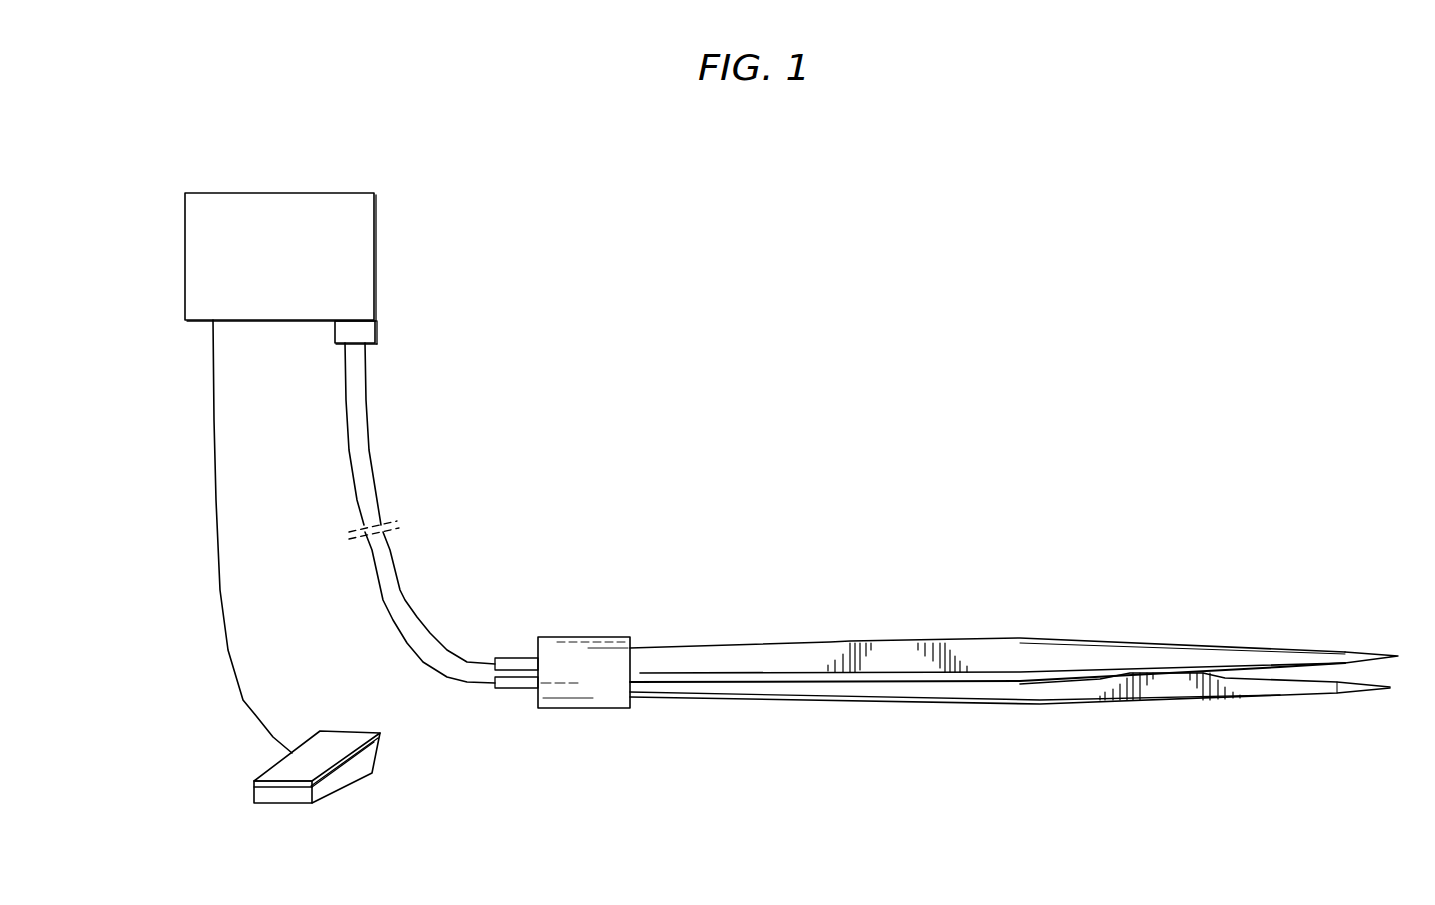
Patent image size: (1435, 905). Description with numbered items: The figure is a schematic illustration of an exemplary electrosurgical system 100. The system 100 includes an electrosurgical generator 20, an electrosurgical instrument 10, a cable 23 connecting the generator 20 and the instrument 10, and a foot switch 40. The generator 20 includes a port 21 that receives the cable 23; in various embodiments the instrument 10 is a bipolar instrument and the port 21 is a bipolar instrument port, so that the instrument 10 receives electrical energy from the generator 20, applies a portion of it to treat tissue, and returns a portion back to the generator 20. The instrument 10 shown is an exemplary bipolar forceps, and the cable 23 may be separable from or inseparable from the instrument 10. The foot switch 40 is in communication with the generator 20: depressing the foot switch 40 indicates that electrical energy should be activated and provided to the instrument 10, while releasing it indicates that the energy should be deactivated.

The electrosurgical system 100 is at (639, 200).
The electrosurgical instrument 10 is at (938, 560).
The electrosurgical generator 20 is at (185, 222).
The port 21 is at (377, 333).
The cable 23 is at (428, 570).
The foot switch 40 is at (347, 772).